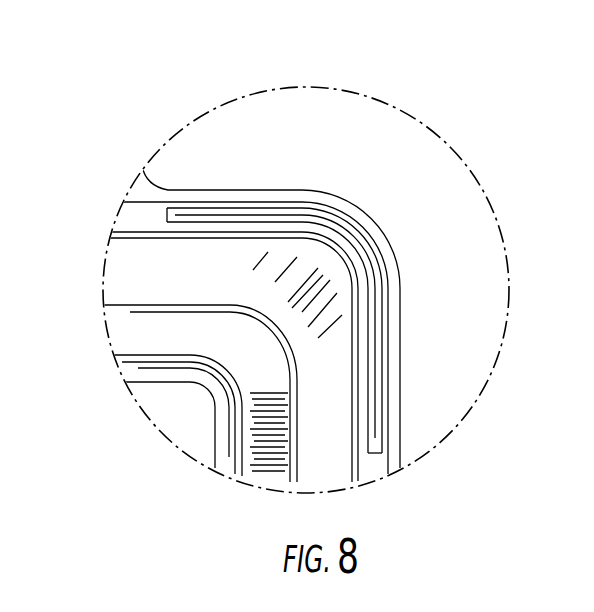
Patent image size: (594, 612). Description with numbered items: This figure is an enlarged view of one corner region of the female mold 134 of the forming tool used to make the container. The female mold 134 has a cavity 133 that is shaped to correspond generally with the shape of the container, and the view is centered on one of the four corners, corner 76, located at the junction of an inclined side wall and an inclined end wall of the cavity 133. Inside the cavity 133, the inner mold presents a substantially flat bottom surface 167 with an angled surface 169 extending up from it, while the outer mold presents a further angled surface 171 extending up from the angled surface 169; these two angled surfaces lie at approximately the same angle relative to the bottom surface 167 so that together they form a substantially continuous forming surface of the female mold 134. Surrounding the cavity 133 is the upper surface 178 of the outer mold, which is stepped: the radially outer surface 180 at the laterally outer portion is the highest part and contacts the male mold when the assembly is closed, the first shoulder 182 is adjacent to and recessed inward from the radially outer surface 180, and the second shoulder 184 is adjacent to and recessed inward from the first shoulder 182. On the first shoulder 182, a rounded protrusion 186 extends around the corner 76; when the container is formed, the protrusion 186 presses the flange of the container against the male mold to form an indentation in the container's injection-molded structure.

The corner 76 is at (342, 202).
The upper surface 178 is at (303, 204).
The angled surface 169 is at (227, 341).
The second shoulder 184 is at (343, 262).
The angled surface 171 is at (328, 375).
The protrusion 186 is at (377, 407).
The radially outer surface 180 is at (393, 445).
The first shoulder 182 is at (380, 467).
The cavity 133 is at (177, 414).
The bottom surface 167 is at (203, 436).
The female mold 134 is at (318, 460).